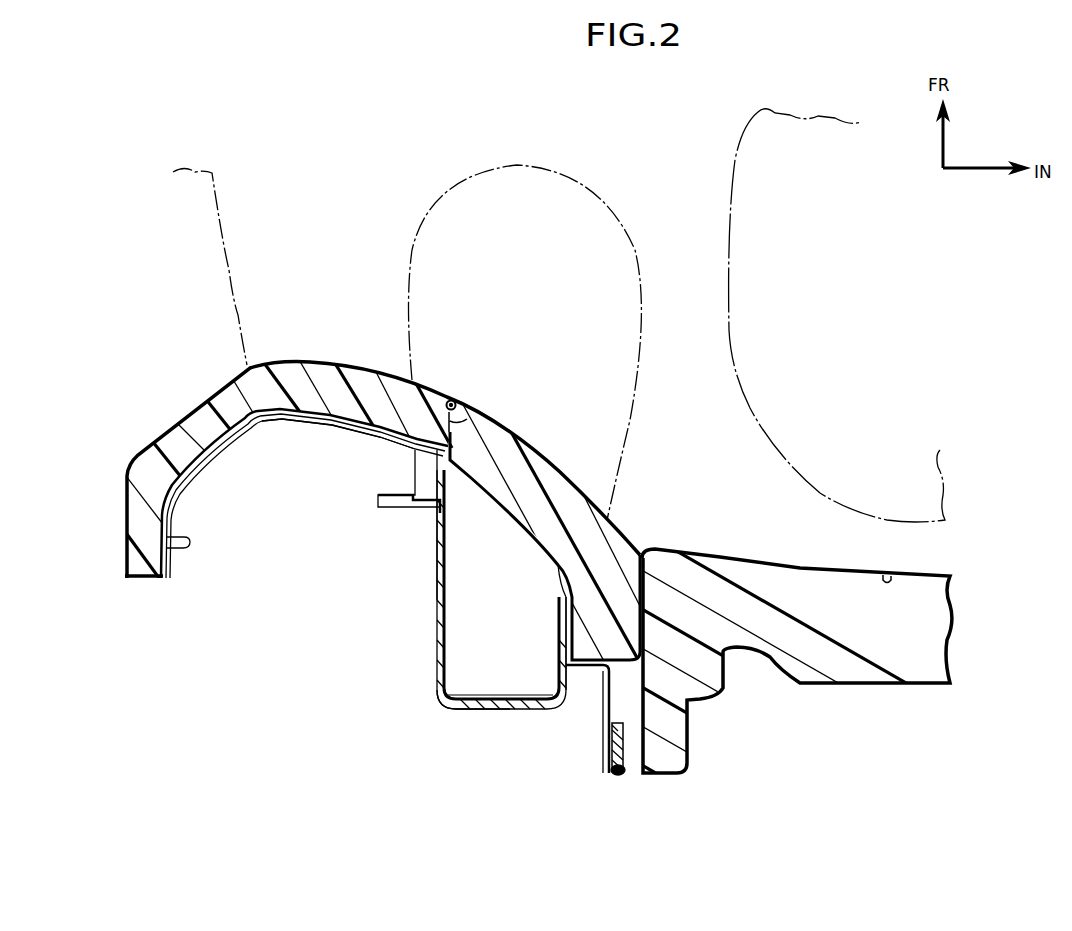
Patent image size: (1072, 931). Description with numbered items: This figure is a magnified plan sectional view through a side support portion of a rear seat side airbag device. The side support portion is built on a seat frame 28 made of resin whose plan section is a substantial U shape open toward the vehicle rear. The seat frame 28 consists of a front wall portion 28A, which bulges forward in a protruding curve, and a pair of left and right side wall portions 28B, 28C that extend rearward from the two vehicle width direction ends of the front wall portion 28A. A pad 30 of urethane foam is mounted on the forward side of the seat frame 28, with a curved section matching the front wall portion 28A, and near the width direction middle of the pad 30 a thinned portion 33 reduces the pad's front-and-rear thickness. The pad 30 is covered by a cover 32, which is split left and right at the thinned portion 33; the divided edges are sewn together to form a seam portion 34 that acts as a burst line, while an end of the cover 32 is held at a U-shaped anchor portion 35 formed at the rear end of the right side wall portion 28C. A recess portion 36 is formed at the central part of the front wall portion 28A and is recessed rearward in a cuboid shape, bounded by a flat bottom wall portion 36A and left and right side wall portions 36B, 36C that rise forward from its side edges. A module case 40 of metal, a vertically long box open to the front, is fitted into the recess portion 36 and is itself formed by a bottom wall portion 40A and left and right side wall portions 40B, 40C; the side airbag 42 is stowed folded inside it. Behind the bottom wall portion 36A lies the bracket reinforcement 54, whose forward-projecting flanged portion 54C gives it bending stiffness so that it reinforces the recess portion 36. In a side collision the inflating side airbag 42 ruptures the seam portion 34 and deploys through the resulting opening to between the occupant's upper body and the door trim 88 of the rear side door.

The seat frame 28 is at (313, 421).
The front wall portion 28A is at (346, 428).
The left side wall portion 28B is at (186, 549).
The right side wall portion 28C is at (601, 722).
The pad 30 is at (326, 362).
The cover 32 is at (672, 722).
The thinned portion 33 is at (458, 422).
The seam portion 34 is at (453, 400).
The anchor portion 35 is at (617, 778).
The recess portion 36 is at (442, 653).
The bottom wall portion 36A is at (501, 709).
The left side wall portion 36B is at (437, 610).
The right side wall portion 36C is at (588, 665).
The module case 40 is at (437, 546).
The bottom wall portion 40A is at (480, 710).
The left side wall portion 40B is at (436, 574).
The right side wall portion 40C is at (563, 666).
The side airbag 42 is at (603, 225).
The bracket reinforcement 54 is at (500, 710).
The flanged portion 54C is at (450, 682).
The door trim 88 is at (228, 266).